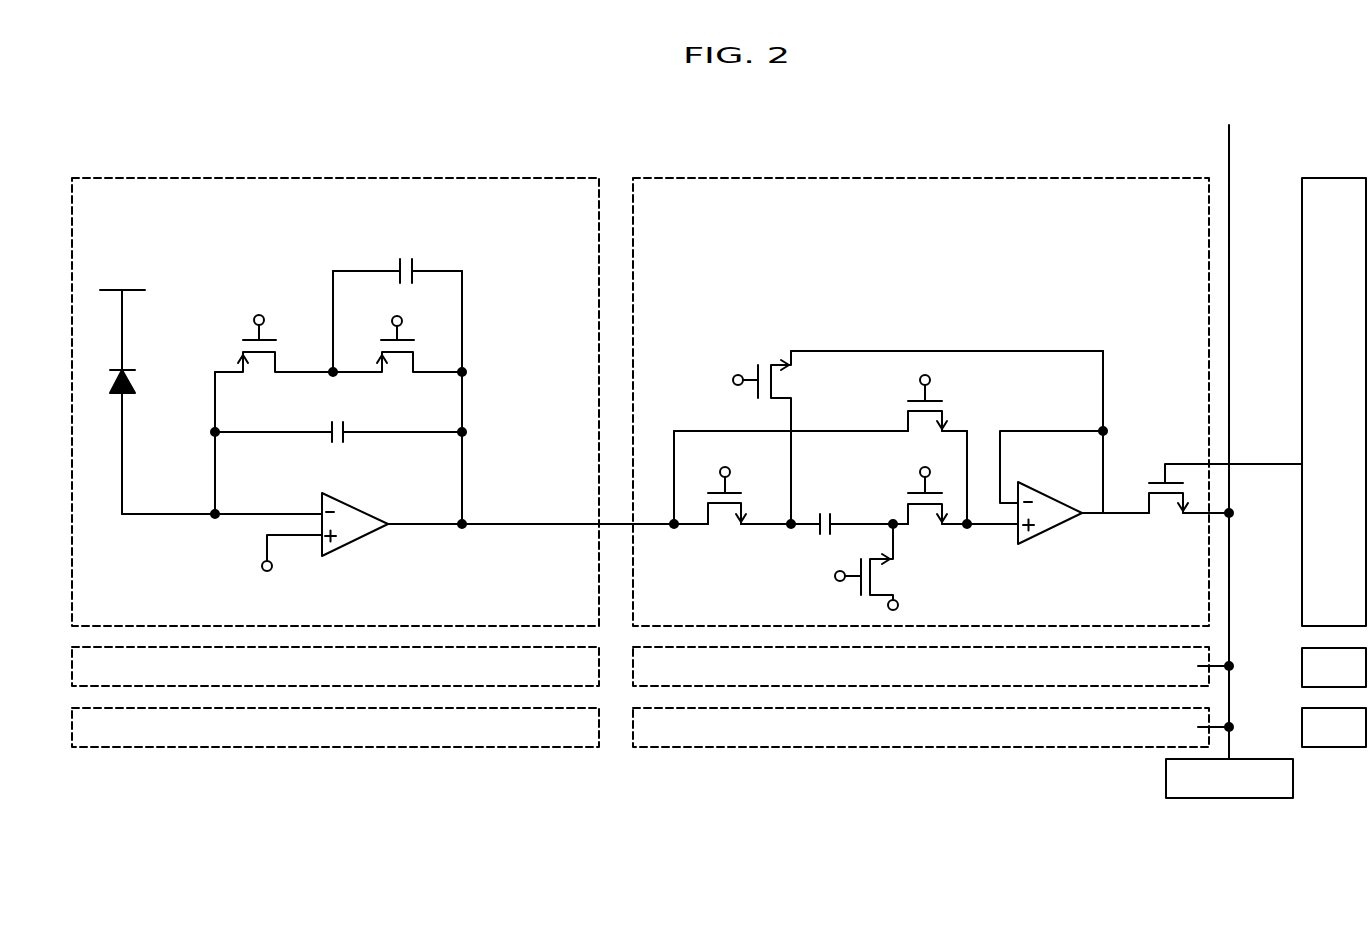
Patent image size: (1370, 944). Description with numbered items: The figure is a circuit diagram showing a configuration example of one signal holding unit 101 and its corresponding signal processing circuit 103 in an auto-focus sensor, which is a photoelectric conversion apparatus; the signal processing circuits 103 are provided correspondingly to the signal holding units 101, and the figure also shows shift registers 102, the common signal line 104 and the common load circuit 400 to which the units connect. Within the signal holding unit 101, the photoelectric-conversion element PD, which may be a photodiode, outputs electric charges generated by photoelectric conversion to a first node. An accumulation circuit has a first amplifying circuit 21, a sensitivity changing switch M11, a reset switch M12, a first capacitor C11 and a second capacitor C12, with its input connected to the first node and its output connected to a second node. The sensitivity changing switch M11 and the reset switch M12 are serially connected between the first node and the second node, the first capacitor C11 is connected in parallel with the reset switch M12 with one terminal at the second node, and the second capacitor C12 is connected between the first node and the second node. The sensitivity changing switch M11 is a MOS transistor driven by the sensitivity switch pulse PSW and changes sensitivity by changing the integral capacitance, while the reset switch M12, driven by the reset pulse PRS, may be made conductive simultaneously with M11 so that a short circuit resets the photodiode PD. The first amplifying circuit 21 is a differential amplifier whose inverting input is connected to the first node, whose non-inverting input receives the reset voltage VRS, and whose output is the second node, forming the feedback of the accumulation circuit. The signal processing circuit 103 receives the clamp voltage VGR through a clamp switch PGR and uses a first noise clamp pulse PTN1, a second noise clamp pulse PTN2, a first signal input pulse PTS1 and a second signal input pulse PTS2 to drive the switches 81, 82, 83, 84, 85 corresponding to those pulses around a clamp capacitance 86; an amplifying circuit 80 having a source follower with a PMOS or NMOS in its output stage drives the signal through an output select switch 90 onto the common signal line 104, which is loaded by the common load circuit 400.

The signal holding unit 101 is at (494, 178).
The shift register 102 is at (1340, 177).
The signal processing circuit 103 is at (1066, 178).
The common signal line 104 is at (1231, 152).
The common load circuit 400 is at (1228, 800).
The first amplifying circuit 21 is at (345, 544).
The amplifying circuit 80 is at (1045, 531).
The switch 81 is at (943, 405).
The switch 82 is at (860, 595).
The switch 83 is at (718, 519).
The switch 84 is at (923, 520).
The switch 85 is at (766, 360).
The clamp capacitance 86 is at (826, 507).
The output select switch 90 is at (1167, 512).
The photoelectric-conversion element PD is at (136, 402).
The sensitivity changing switch M11 is at (242, 347).
The reset switch M12 is at (414, 345).
The first capacitor C11 is at (410, 256).
The second capacitor C12 is at (343, 430).
The sensitivity switch pulse PSW is at (257, 300).
The reset pulse PRS is at (395, 301).
The reset voltage VRS is at (282, 570).
The first noise clamp pulse PTN1 is at (878, 381).
The second noise clamp pulse PTN2 is at (703, 381).
The first signal input pulse PTS1 is at (918, 454).
The second signal input pulse PTS2 is at (718, 454).
The clamp switch PGR is at (805, 580).
The clamp voltage VGR is at (928, 608).